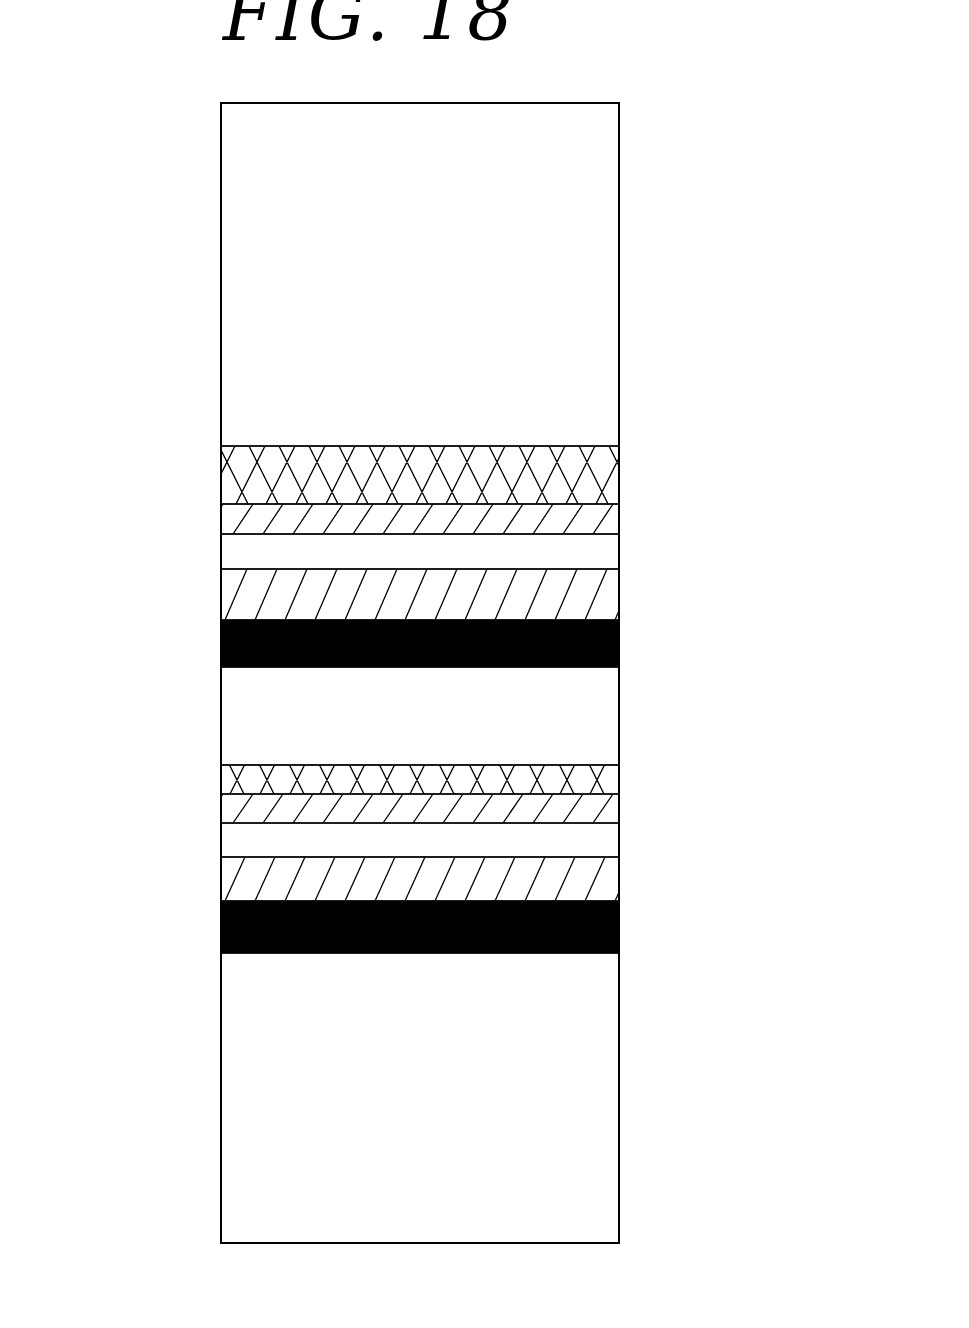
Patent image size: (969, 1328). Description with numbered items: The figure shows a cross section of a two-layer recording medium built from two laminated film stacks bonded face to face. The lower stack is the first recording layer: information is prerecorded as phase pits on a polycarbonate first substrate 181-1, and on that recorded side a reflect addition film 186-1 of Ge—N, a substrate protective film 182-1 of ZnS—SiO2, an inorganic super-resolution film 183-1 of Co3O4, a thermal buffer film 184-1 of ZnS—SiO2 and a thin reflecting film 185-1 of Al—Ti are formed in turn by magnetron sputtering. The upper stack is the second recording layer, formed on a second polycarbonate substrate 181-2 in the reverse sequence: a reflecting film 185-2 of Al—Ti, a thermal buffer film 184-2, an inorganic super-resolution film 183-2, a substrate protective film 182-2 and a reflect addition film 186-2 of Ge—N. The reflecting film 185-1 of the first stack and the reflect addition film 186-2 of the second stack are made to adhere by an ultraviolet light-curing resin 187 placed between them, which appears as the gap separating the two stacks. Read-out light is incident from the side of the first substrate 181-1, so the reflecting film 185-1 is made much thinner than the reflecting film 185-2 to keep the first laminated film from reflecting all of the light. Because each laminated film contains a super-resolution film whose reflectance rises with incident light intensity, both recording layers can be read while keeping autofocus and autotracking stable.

The first substrate 181-1 is at (238, 998).
The second substrate 181-2 is at (228, 317).
The substrate protective film 182-1 is at (238, 881).
The substrate protective film 182-2 is at (232, 600).
The inorganic super-resolution film 183-1 is at (240, 841).
The inorganic super-resolution film 183-2 is at (232, 558).
The thermal buffer film 184-1 is at (238, 811).
The thermal buffer film 184-2 is at (230, 522).
The reflecting film 185-1 is at (232, 776).
The reflecting film 185-2 is at (228, 478).
The reflect addition film 186-1 is at (228, 926).
The reflect addition film 186-2 is at (228, 642).
The ultraviolet light-curing resin 187 is at (236, 698).